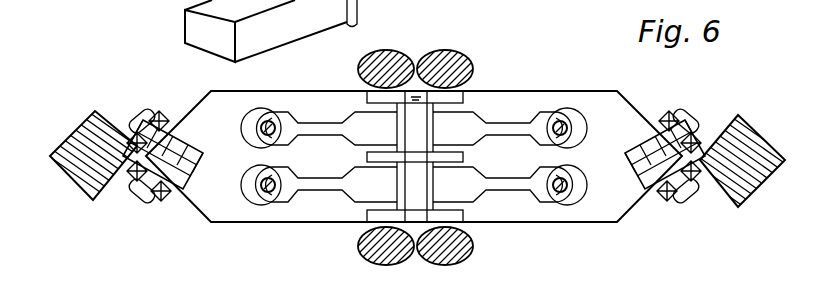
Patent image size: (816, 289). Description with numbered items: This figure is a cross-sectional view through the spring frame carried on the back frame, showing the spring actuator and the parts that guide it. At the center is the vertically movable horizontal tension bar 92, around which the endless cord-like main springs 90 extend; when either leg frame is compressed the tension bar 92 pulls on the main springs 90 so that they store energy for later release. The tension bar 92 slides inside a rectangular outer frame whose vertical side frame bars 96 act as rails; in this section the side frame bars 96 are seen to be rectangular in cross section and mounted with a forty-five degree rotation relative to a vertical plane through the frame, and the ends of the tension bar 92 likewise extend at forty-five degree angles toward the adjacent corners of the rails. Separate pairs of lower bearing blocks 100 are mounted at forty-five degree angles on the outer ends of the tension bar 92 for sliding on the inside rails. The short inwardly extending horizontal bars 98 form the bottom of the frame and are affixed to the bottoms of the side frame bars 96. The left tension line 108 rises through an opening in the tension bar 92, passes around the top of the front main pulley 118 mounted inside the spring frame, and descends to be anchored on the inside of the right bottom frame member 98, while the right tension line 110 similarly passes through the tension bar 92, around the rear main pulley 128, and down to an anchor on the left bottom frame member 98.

The endless cord-like main springs 90 is at (410, 44).
The horizontal tension bar 92 is at (488, 98).
The vertical side frame bars 96 is at (82, 127).
The short inwardly extending horizontal bars 98 is at (296, 38).
The lower bearing blocks 100 is at (170, 112).
The left tension line 108 is at (274, 196).
The right tension line 110 is at (270, 113).
The front main pulley 118 is at (523, 198).
The rear main pulley 128 is at (314, 115).